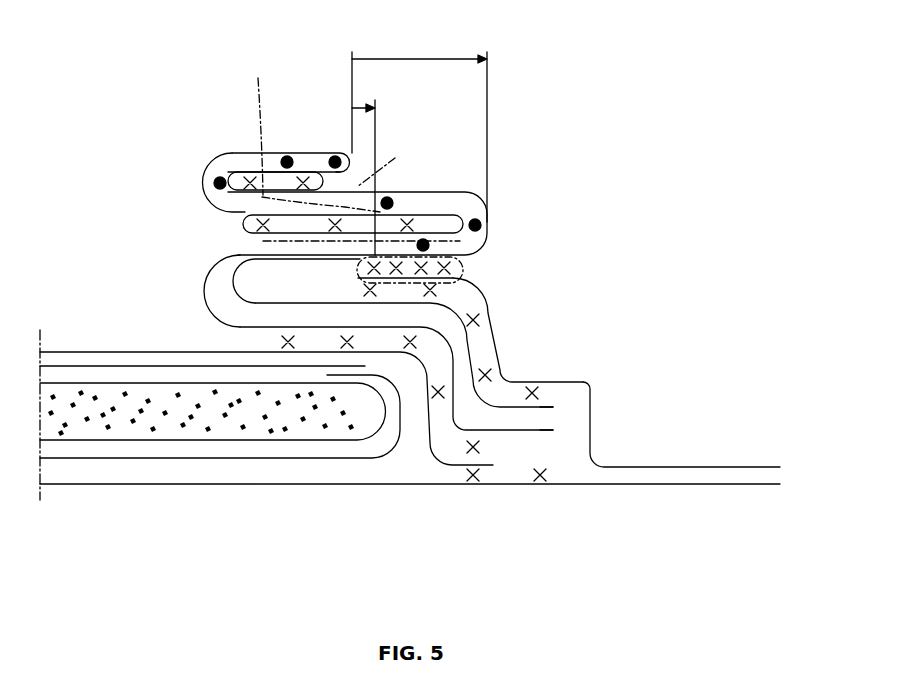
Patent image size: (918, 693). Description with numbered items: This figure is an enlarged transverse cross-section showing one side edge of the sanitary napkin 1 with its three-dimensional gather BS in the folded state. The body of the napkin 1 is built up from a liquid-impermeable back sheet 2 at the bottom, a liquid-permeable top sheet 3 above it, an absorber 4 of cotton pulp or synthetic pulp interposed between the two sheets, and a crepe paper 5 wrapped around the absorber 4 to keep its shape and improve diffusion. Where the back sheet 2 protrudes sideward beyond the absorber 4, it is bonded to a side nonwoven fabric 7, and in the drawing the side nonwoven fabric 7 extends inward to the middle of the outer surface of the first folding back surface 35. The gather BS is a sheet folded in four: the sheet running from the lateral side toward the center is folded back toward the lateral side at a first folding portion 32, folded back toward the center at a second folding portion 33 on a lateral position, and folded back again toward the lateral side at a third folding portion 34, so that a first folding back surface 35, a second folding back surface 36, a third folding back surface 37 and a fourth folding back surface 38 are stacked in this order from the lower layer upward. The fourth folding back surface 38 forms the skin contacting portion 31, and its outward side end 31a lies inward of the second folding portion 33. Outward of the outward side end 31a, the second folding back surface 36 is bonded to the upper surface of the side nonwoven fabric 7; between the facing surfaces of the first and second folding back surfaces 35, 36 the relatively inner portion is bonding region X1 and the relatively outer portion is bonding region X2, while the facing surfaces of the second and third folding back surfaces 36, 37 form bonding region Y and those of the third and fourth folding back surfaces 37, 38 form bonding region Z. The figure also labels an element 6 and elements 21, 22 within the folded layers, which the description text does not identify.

The sanitary napkin 1 is at (100, 218).
The liquid-impermeable back sheet 2 is at (345, 484).
The liquid-permeable top sheet 3 is at (68, 352).
The absorber 4 is at (113, 432).
The crepe paper 5 is at (213, 367).
The joining portion 6 is at (520, 432).
The side nonwoven fabric 7 is at (700, 462).
The sewing thread 21 is at (470, 217).
The sewing thread 22 is at (212, 168).
The skin contacting portion 31 is at (266, 116).
The fourth folding back surface 38 is at (250, 158).
The outward side end 31a is at (353, 165).
The first folding portion 32 is at (210, 288).
The second folding portion 33 is at (490, 223).
The third folding portion 34 is at (213, 183).
The first folding back surface 35 is at (297, 312).
The second folding back surface 36 is at (275, 240).
The third folding back surface 37 is at (262, 198).
The three-dimensional gather BS is at (497, 188).
The bonding region X1 is at (358, 266).
The bonding region X2 is at (463, 268).
The bonding region Y is at (378, 160).
The bonding region Z is at (351, 143).